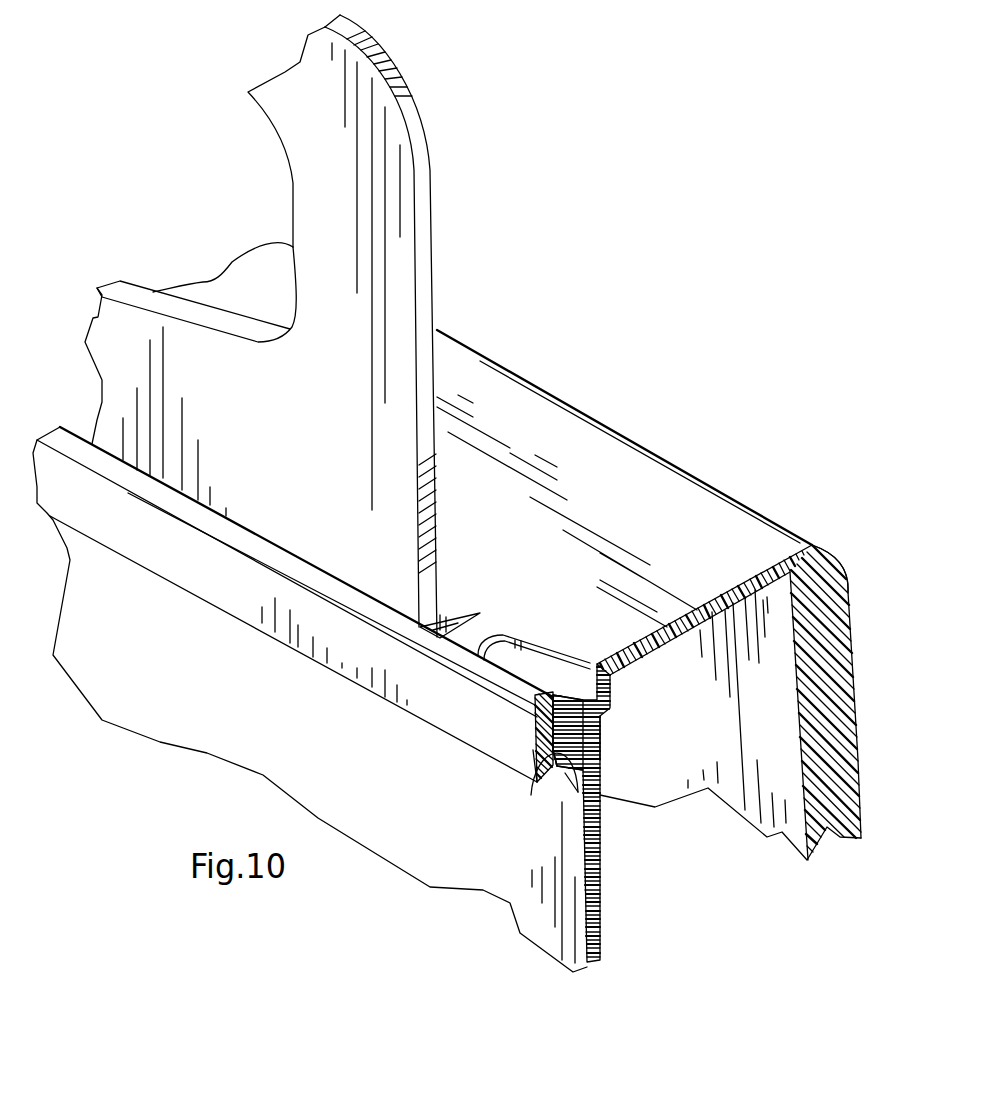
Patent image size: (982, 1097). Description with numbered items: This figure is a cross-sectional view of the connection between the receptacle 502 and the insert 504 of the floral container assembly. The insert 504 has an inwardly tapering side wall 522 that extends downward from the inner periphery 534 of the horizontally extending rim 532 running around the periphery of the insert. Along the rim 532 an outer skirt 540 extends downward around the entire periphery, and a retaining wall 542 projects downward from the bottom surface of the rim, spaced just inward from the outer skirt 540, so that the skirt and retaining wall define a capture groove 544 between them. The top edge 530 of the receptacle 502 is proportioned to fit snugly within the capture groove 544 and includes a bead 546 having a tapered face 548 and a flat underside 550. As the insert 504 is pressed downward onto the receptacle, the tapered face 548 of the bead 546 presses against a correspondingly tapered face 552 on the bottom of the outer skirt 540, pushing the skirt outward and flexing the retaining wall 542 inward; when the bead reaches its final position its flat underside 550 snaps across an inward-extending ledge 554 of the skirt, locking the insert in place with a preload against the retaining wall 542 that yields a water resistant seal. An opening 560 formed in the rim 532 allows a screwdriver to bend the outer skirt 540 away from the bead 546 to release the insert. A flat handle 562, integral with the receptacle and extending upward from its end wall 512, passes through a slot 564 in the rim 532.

The receptacle 502 is at (408, 884).
The insert 504 is at (670, 375).
The end wall 512 is at (383, 822).
The side wall 522 is at (847, 693).
The top edge 530 is at (525, 672).
The rim 532 is at (737, 578).
The inner periphery 534 is at (807, 536).
The outer skirt 540 is at (465, 725).
The retaining wall 542 is at (606, 720).
The capture groove 544 is at (598, 780).
The bead 546 is at (610, 700).
The tapered face 548 is at (553, 752).
The flat underside 550 is at (600, 757).
The tapered face 552 is at (565, 773).
The ledge 554 is at (533, 748).
The opening 560 is at (517, 650).
The handle 562 is at (367, 143).
The slot 564 is at (430, 628).